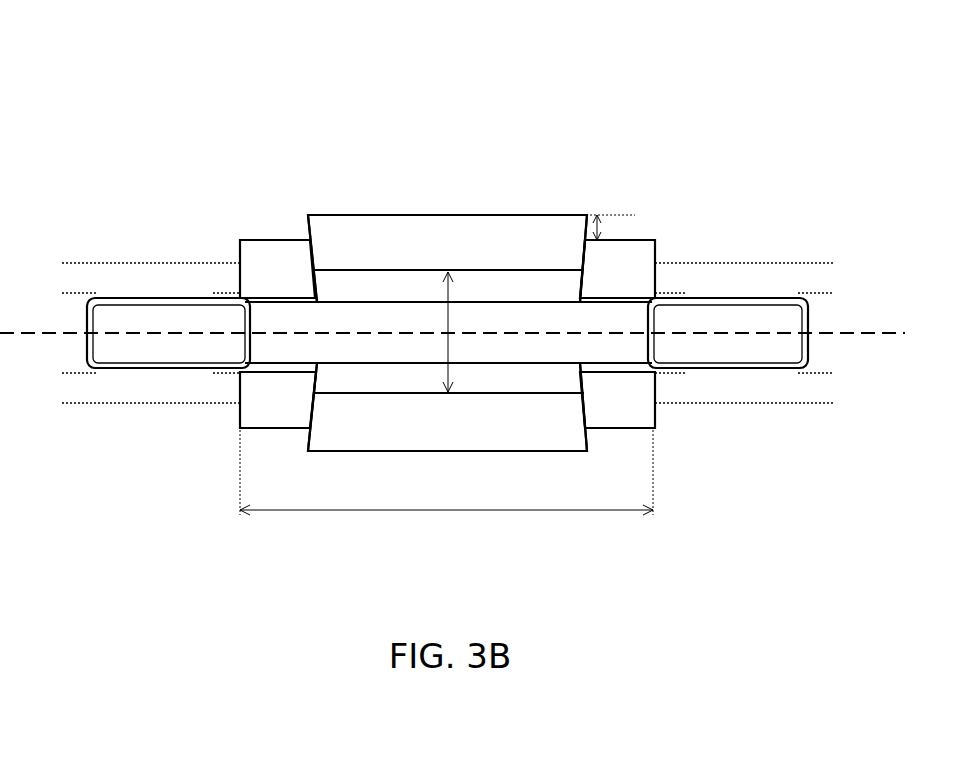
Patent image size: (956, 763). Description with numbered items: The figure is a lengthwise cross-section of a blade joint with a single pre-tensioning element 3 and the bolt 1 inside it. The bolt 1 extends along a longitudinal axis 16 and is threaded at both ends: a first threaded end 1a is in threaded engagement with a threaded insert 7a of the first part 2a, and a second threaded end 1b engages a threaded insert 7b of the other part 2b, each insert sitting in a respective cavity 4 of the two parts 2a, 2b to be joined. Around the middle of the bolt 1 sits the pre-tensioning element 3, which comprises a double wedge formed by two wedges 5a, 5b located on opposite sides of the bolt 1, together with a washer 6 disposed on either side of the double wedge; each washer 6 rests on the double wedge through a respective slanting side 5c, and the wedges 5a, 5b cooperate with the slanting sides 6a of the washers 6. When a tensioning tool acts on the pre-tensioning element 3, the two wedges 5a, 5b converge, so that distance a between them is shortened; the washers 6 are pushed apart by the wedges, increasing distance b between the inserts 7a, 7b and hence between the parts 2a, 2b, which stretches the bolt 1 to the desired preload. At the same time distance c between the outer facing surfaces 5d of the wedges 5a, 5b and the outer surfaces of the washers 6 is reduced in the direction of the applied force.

The bolt 1 is at (267, 317).
The first threaded end 1a is at (163, 347).
The second threaded end 1b is at (690, 347).
The first part 2a is at (137, 383).
The second part 2b is at (742, 385).
The pre-tensioning element 3 is at (455, 256).
The cavity 4 is at (813, 293).
The wedge 5a is at (375, 235).
The wedge 5b is at (332, 435).
The slanting side 5c is at (308, 217).
The outer facing surface 5d is at (415, 215).
The washer 6 is at (265, 253).
The slanting side 6a is at (577, 282).
The threaded insert 7a is at (117, 297).
The threaded insert 7b is at (728, 295).
The longitudinal axis 16 is at (833, 337).
The distance a is at (447, 336).
The distance b is at (500, 513).
The distance c is at (602, 223).